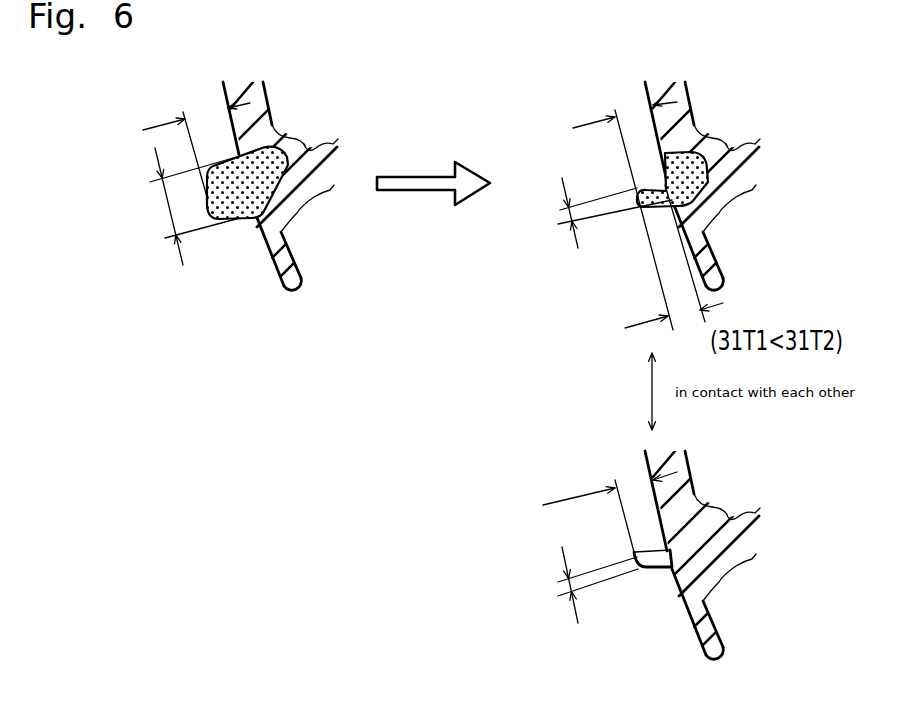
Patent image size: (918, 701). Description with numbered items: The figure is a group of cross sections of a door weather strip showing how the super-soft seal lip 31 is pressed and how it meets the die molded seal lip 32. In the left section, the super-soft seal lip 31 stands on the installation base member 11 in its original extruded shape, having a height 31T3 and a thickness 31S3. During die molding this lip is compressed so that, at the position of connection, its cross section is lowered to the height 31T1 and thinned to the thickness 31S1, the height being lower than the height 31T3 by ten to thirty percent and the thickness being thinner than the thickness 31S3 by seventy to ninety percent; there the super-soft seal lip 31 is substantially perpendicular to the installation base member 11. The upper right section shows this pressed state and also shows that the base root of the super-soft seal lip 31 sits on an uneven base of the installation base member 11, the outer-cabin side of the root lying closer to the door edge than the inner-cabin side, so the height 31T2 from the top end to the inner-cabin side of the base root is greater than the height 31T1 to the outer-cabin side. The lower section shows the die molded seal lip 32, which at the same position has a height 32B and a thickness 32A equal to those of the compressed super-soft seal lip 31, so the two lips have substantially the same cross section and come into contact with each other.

The installation base member 11 is at (224, 97).
The super-soft seal lip 31 is at (231, 213).
The die molded seal lip 32 is at (645, 553).
The height of super-soft seal lip 31T3 is at (170, 150).
The thickness of super-soft seal lip 31S3 is at (195, 221).
The height from top end to inner-cabin side of base root 31T2 is at (598, 215).
The thickness of super-soft seal lip at position of connection 31S1 is at (614, 228).
The height of super-soft seal lip at position of connection 31T1 is at (648, 266).
The height of die molded seal lip 32B is at (573, 508).
The thickness of die molded seal lip 32A is at (585, 610).